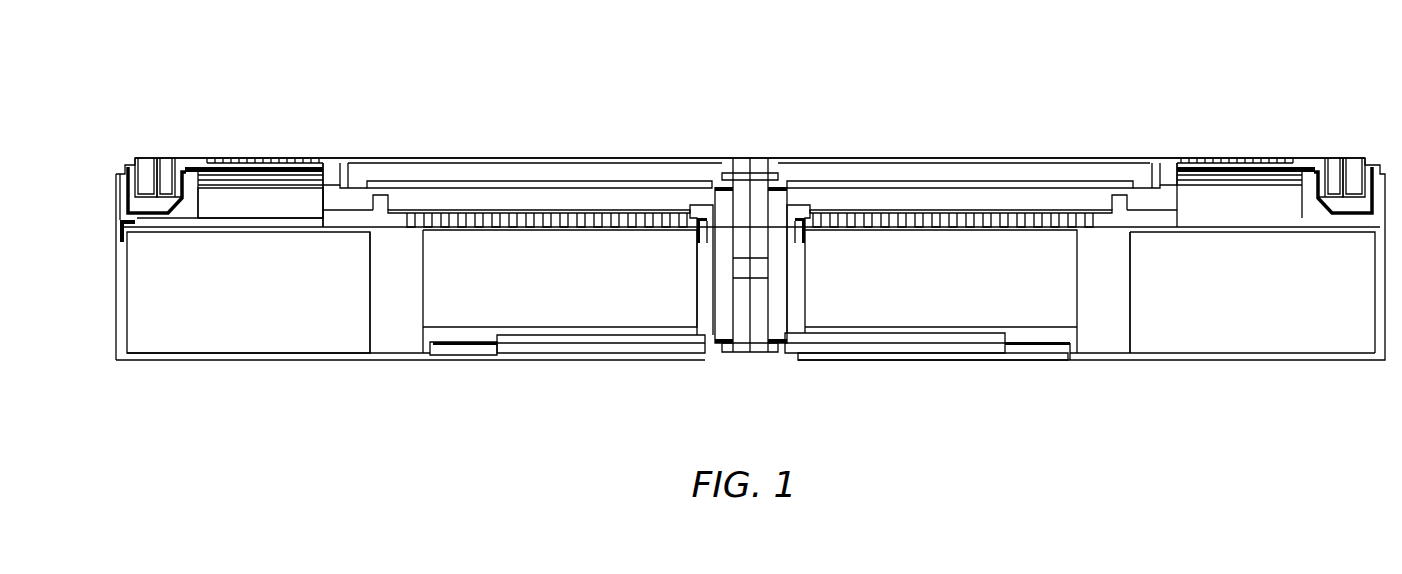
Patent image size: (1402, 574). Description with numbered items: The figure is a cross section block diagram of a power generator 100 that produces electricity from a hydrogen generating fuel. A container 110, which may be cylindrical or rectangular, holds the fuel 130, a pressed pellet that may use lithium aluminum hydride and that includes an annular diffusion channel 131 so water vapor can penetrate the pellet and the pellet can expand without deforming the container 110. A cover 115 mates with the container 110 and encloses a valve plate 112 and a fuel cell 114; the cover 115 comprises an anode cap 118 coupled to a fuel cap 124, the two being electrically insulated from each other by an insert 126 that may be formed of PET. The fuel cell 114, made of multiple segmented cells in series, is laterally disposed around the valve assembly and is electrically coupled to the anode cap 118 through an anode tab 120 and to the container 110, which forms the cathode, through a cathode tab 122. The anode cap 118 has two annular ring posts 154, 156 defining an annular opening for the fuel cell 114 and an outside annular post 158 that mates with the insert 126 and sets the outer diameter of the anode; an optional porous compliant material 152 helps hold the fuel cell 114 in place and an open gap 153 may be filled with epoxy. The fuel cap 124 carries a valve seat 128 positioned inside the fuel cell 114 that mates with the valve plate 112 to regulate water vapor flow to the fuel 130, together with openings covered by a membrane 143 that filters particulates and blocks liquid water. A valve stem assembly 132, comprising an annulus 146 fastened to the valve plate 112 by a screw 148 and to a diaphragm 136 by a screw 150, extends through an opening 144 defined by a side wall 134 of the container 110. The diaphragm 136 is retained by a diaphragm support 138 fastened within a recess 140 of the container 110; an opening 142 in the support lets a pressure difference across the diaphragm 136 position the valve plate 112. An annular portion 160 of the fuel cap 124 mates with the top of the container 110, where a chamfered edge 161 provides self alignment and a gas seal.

The power generator 100 is at (1252, 52).
The container 110 is at (118, 294).
The valve plate 112 is at (548, 183).
The fuel cell 114 is at (265, 158).
The cover 115 is at (128, 130).
The anode cap 118 is at (440, 160).
The anode tab 120 is at (340, 190).
The cathode tab 122 is at (168, 210).
The fuel cap 124 is at (475, 215).
The insert 126 is at (128, 168).
The valve seat 128 is at (381, 205).
The fuel 130 is at (195, 333).
The diffusion channel 131 is at (418, 294).
The valve stem assembly 132 is at (790, 250).
The side wall 134 is at (699, 292).
The diaphragm 136 is at (925, 345).
The diaphragm support 138 is at (568, 357).
The recess 140 is at (430, 355).
The opening 142 is at (800, 362).
The membrane 143 is at (978, 205).
The opening 144 is at (748, 339).
The annulus 146 is at (722, 205).
The screw 148 is at (760, 178).
The screw 150 is at (748, 352).
The porous compliant material 152 is at (262, 205).
The open gap 153 is at (333, 170).
The annular ring post 154 is at (346, 175).
The annular ring post 156 is at (180, 172).
The outside annular post 158 is at (146, 165).
The annular portion 160 is at (118, 232).
The chamfered edge 161 is at (127, 232).